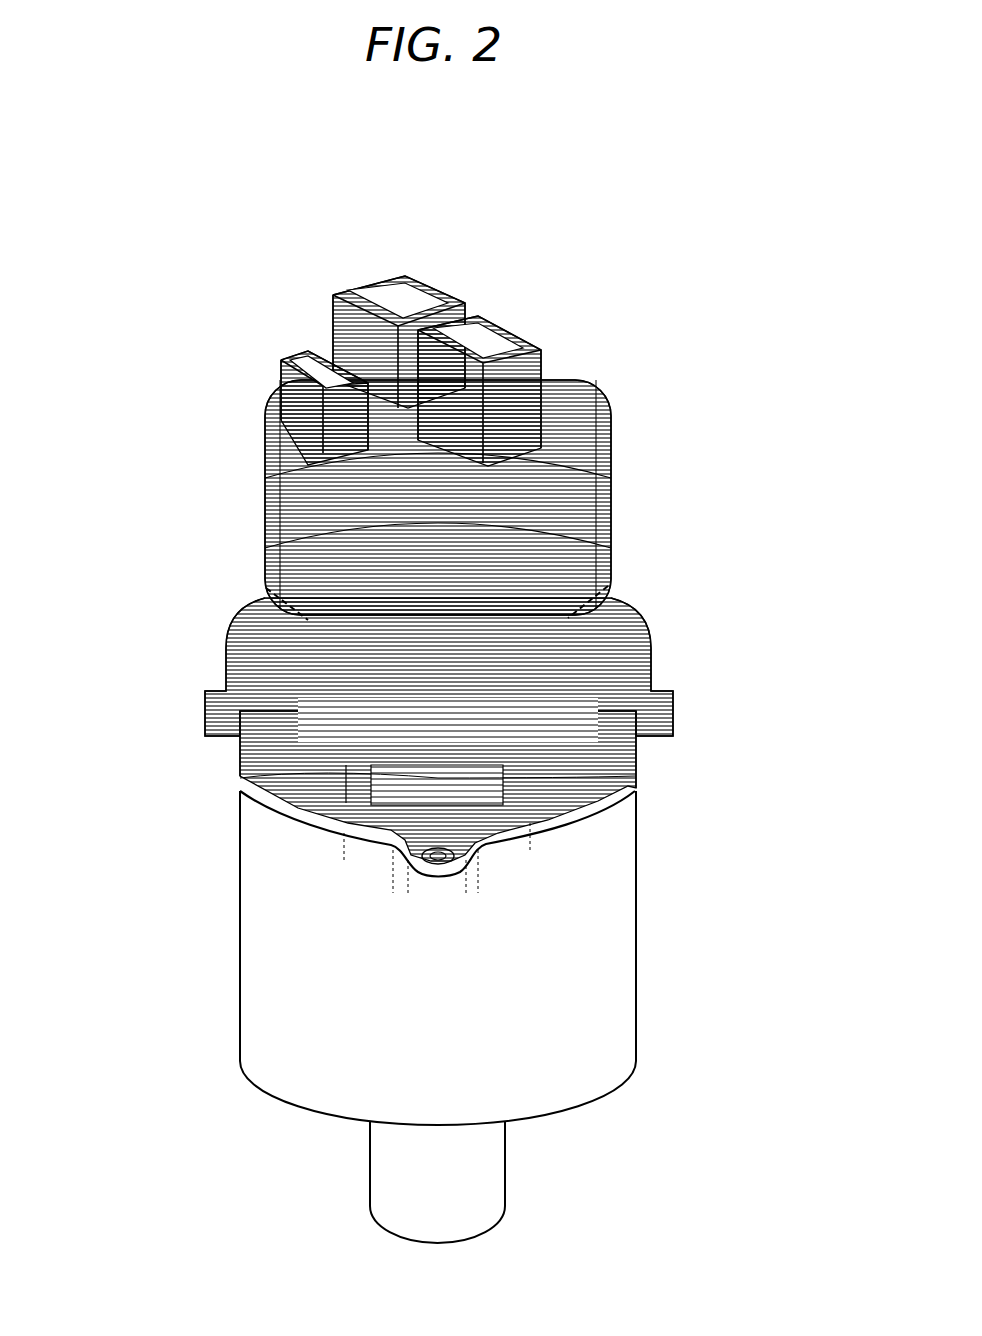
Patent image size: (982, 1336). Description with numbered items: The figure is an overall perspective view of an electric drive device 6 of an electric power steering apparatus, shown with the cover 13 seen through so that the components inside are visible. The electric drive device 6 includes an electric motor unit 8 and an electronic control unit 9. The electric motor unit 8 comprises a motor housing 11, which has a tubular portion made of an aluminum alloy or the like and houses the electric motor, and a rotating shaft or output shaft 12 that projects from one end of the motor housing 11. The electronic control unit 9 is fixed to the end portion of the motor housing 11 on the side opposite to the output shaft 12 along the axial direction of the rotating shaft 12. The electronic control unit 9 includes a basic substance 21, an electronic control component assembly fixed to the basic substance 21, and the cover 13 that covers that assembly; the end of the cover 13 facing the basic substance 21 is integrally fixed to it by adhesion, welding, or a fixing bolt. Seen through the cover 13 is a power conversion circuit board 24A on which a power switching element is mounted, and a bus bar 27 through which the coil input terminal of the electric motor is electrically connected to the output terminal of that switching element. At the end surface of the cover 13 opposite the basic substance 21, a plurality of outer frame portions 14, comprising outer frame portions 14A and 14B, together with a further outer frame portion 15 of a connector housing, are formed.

The electric drive device 6 is at (722, 315).
The electric motor unit 8 is at (135, 750).
The electronic control unit 9 is at (135, 265).
The motor housing 11 is at (628, 957).
The rotating shaft (output shaft) 12 is at (497, 1153).
The cover 13 is at (602, 462).
The outer frame portions of connector housing 14 is at (610, 167).
The outer frame portion of connector housing 14A is at (503, 323).
The outer frame portion of connector housing 14B is at (407, 270).
The outer frame portion of connector housing 15 is at (290, 343).
The basic substance 21 is at (577, 757).
The power conversion circuit board 24A is at (602, 575).
The bus bar 27 is at (257, 577).